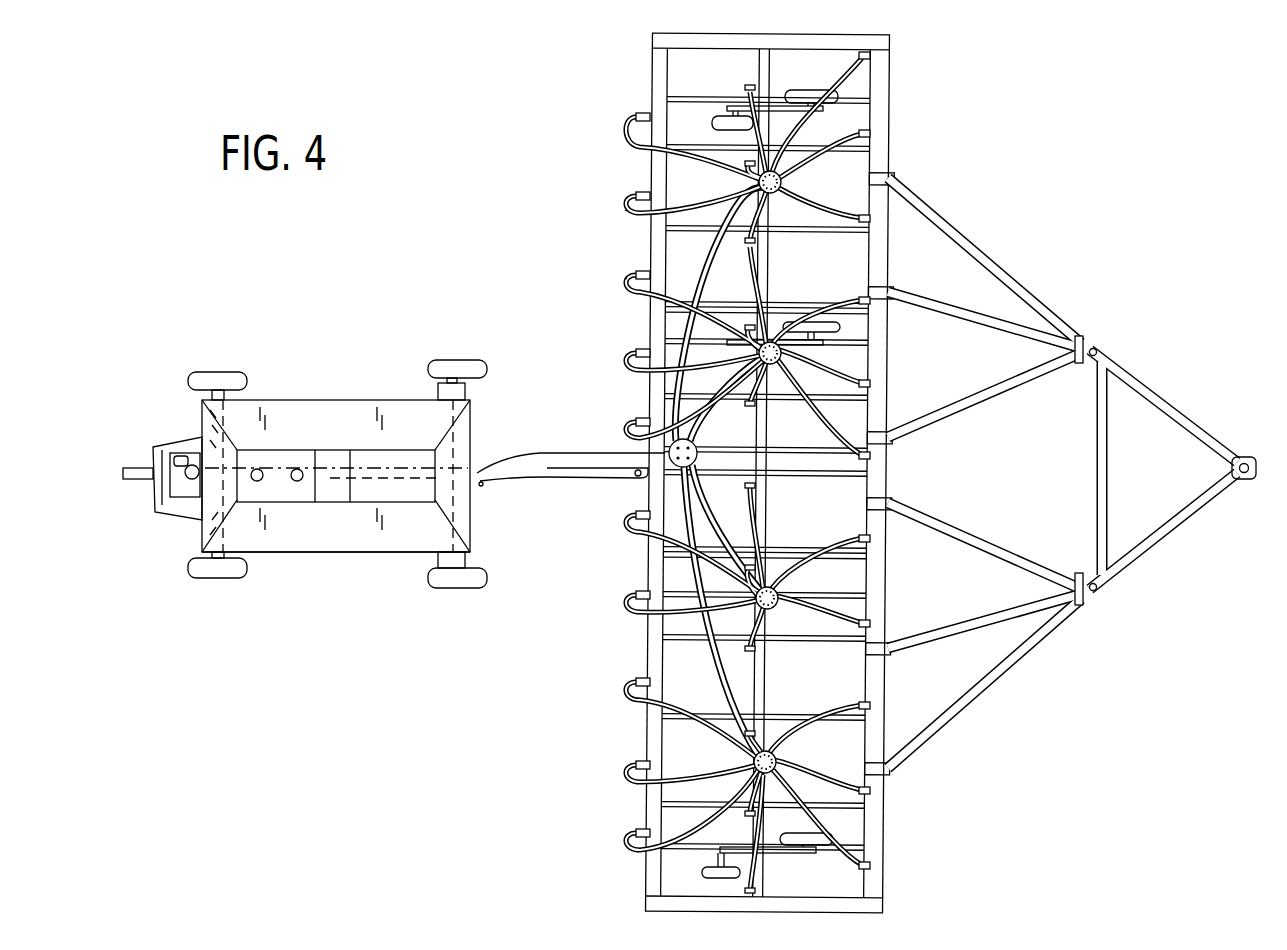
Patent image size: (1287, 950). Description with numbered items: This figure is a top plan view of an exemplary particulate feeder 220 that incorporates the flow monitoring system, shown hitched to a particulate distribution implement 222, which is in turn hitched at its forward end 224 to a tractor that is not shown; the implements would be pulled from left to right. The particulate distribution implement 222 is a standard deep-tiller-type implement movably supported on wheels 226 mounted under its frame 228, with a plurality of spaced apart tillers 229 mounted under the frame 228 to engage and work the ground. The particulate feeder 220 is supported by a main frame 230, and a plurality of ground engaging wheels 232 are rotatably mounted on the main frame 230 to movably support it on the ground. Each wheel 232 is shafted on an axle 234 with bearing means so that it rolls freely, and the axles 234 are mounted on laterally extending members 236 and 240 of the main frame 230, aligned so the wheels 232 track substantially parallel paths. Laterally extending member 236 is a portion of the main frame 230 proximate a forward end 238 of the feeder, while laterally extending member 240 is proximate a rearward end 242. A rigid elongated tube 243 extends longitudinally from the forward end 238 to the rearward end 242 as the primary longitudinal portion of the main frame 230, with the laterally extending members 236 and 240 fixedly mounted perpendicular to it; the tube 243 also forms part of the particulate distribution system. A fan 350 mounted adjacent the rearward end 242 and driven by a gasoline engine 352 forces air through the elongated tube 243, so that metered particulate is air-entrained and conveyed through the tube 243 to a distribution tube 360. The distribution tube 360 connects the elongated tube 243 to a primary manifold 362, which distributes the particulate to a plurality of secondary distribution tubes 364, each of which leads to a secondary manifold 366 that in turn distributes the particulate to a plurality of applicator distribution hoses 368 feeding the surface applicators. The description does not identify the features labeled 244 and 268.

The particulate feeder 220 is at (325, 355).
The particulate distribution implement 222 is at (1068, 262).
The forward end 224 is at (1254, 460).
The wheels 226 is at (725, 122).
The frame 228 is at (892, 892).
The tillers 229 is at (750, 84).
The main frame 230 is at (380, 462).
The ground engaging wheels 232 is at (210, 374).
The axle 234 is at (224, 392).
The laterally extending member 236 is at (472, 425).
The forward end 238 is at (472, 515).
The laterally extending member 240 is at (204, 418).
The rearward end 242 is at (203, 530).
The elongated tube 243 is at (405, 490).
The cart bottom 244 is at (338, 556).
The hose loop 268 is at (625, 278).
The fan 350 is at (130, 474).
The gasoline engine 352 is at (160, 450).
The distribution tube 360 is at (548, 462).
The primary manifold 362 is at (693, 470).
The secondary distribution tubes 364 is at (706, 270).
The secondary manifold 366 is at (795, 180).
The applicator distribution hoses 368 is at (842, 75).